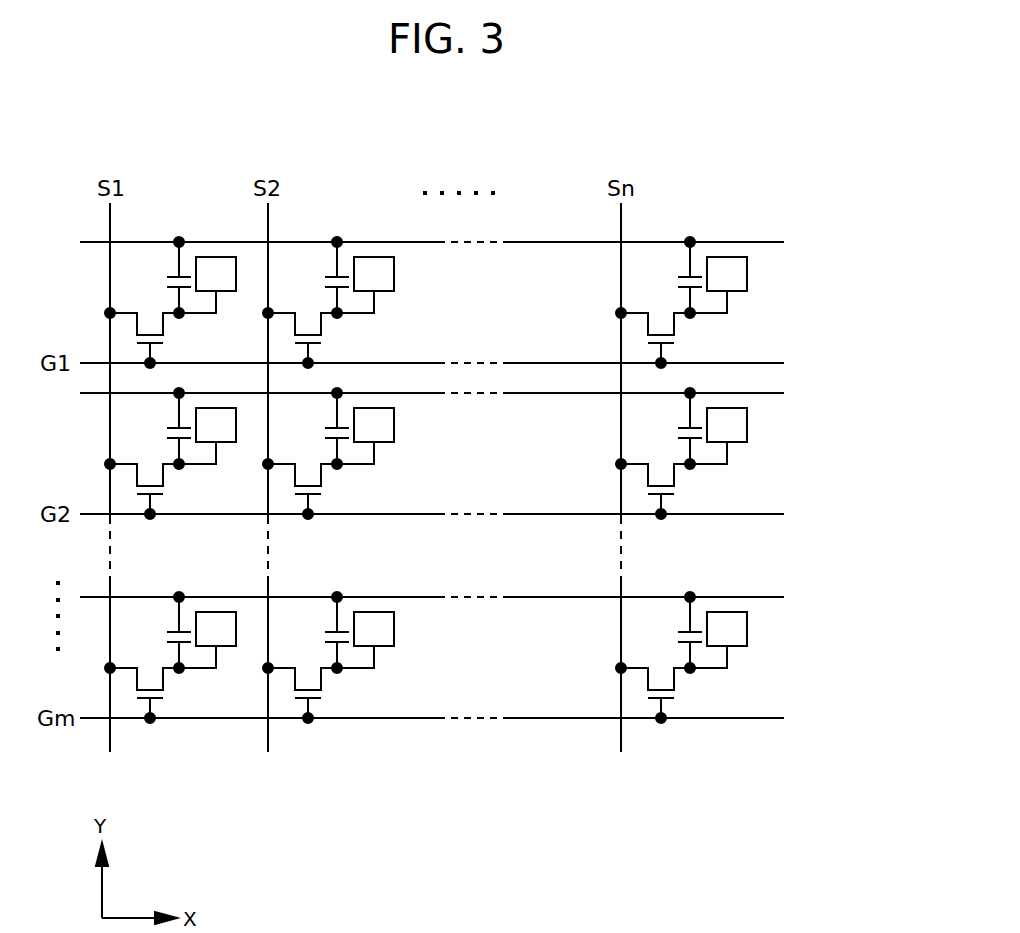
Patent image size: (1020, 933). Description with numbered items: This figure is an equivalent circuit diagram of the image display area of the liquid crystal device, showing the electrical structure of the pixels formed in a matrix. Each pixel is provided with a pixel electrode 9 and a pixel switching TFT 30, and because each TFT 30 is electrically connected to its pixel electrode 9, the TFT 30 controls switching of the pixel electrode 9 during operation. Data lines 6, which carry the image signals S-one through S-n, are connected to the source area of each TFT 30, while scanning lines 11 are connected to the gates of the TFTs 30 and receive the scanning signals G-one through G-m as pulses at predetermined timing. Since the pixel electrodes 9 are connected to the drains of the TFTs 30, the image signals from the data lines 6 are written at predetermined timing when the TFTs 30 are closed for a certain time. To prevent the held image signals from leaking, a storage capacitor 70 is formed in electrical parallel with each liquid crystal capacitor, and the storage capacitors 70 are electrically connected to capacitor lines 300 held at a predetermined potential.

The data line 6 is at (110, 218).
The scanning line 11 is at (768, 363).
The capacitor line 300 is at (768, 243).
The pixel switching TFT 30 is at (130, 327).
The storage capacitor 70 is at (165, 285).
The pixel electrode 9 is at (747, 285).